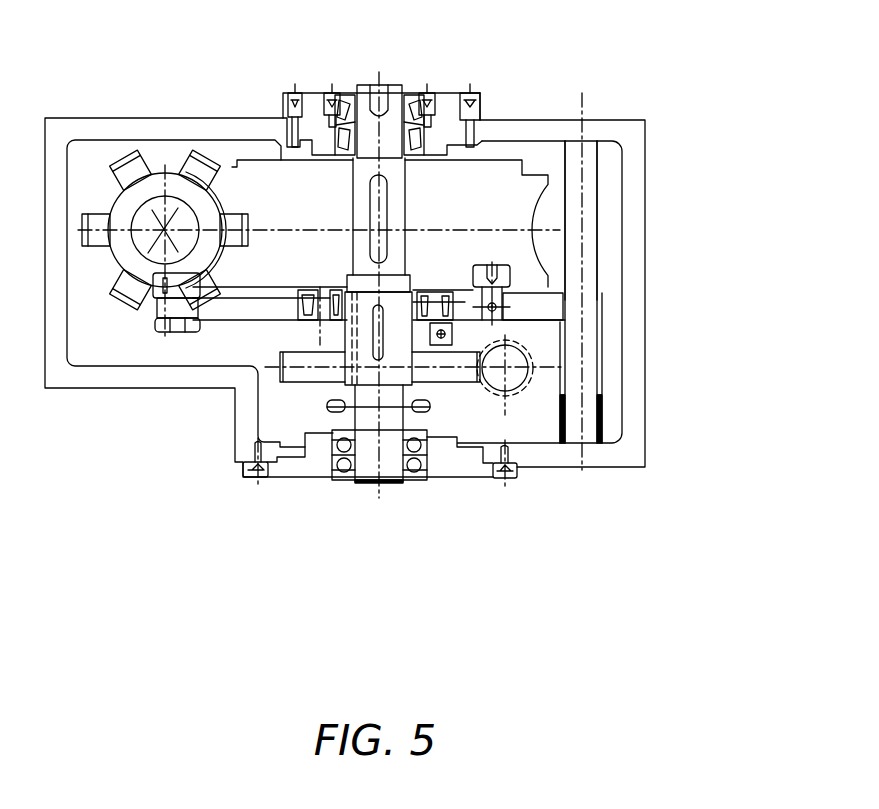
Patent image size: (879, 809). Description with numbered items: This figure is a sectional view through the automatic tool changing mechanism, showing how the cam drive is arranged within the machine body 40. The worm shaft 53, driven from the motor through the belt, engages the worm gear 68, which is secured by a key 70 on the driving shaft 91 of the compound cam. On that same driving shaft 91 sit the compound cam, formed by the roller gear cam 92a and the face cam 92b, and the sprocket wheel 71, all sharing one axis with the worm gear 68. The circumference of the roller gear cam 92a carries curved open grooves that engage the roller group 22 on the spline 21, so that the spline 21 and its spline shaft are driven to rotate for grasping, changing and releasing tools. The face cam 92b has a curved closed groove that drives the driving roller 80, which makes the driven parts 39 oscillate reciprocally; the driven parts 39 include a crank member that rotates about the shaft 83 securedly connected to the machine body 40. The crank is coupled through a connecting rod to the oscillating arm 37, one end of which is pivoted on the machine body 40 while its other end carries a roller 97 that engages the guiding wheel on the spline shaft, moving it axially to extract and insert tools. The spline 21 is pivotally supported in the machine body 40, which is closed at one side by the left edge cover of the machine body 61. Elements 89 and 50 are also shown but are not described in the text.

The spline 21 is at (173, 178).
The roller group 22 is at (198, 165).
The roller gear cam 92a is at (233, 213).
The upper bearing cap 89 is at (443, 128).
The vertical drive shaft 50 is at (478, 215).
The shaft 83 is at (587, 215).
The face cam 92b is at (510, 272).
The driving roller 80 is at (566, 290).
The driven parts 39 is at (552, 307).
The machine body 40 is at (632, 360).
The roller 97 is at (158, 332).
The oscillating arm 37 is at (253, 310).
The key 70 is at (377, 338).
The left edge cover of the machine body 61 is at (313, 457).
The driving shaft 91 is at (373, 447).
The sprocket wheel 71 is at (412, 412).
The worm gear 68 is at (427, 373).
The worm shaft 53 is at (517, 380).